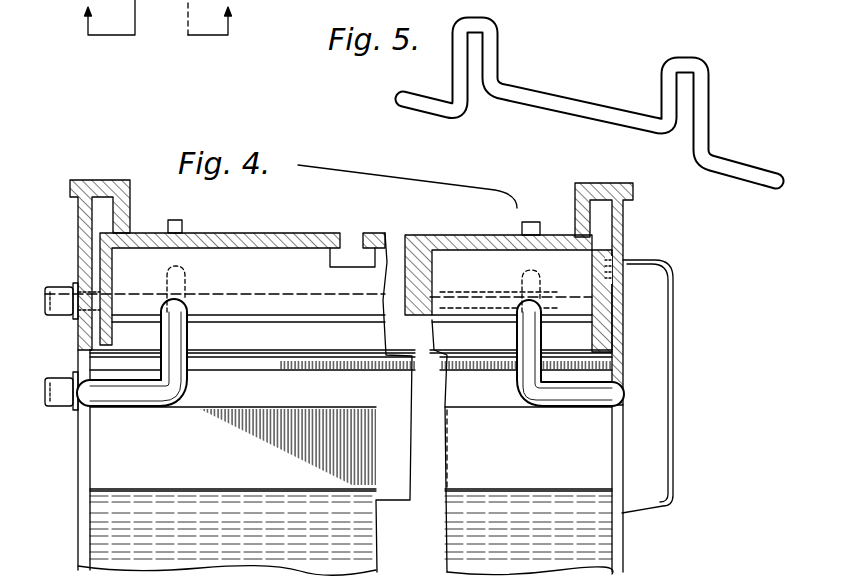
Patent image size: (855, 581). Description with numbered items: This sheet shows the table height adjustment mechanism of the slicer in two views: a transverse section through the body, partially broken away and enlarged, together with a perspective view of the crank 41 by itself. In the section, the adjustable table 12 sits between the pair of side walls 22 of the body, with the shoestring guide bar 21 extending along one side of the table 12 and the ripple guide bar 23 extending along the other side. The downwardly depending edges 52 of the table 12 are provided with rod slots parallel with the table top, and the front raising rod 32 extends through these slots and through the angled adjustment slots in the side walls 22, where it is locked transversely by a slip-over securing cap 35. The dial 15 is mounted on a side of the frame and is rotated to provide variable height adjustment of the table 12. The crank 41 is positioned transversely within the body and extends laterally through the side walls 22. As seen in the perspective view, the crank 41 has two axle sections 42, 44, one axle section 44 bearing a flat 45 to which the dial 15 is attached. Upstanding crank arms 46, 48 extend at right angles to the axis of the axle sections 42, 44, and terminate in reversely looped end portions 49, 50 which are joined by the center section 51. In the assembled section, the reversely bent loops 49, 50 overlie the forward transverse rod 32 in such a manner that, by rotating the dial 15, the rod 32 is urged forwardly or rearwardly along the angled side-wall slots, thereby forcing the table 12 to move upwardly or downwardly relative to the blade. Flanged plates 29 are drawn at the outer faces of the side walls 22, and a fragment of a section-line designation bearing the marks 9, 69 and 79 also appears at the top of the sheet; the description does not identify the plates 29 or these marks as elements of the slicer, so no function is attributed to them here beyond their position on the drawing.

In FIG. 4, the section line 9 is at (156, 28).
In FIG. 4, the adjustable table 12 is at (226, 236).
In FIG. 4, the dial 15 is at (674, 345).
In FIG. 4, the shoestring guide bar 21 is at (521, 230).
In FIG. 4, the side walls 22 is at (618, 546).
In FIG. 4, the ripple guide bar 23 is at (182, 222).
In FIG. 4, the mounting plate 29 is at (97, 180).
In FIG. 4, the front raising rod 32 is at (128, 312).
In FIG. 4, the slip-over securing cap 35 is at (60, 292).
In FIG. 5, the slip-over securing cap 35 is at (607, 0).
In FIG. 4, the crank 41 is at (545, 410).
In FIG. 5, the crank 41 is at (566, 84).
In FIG. 4, the axle section 42 is at (128, 407).
In FIG. 5, the axle section 42 is at (400, 97).
In FIG. 4, the axle section 44 is at (578, 396).
In FIG. 5, the axle section 44 is at (732, 170).
In FIG. 5, the flat 45 is at (766, 186).
In FIG. 5, the crank arm 46 is at (708, 92).
In FIG. 5, the crank arm 48 is at (500, 42).
In FIG. 5, the reversely looped end portion 49 is at (693, 60).
In FIG. 5, the reversely looped end portion 50 is at (492, 26).
In FIG. 4, the center section 51 is at (218, 320).
In FIG. 5, the center section 51 is at (603, 110).
In FIG. 4, the downwardly depending edges 52 is at (109, 283).
In FIG. 4, the element 69 is at (159, 10).
In FIG. 4, the element 79 is at (95, 0).